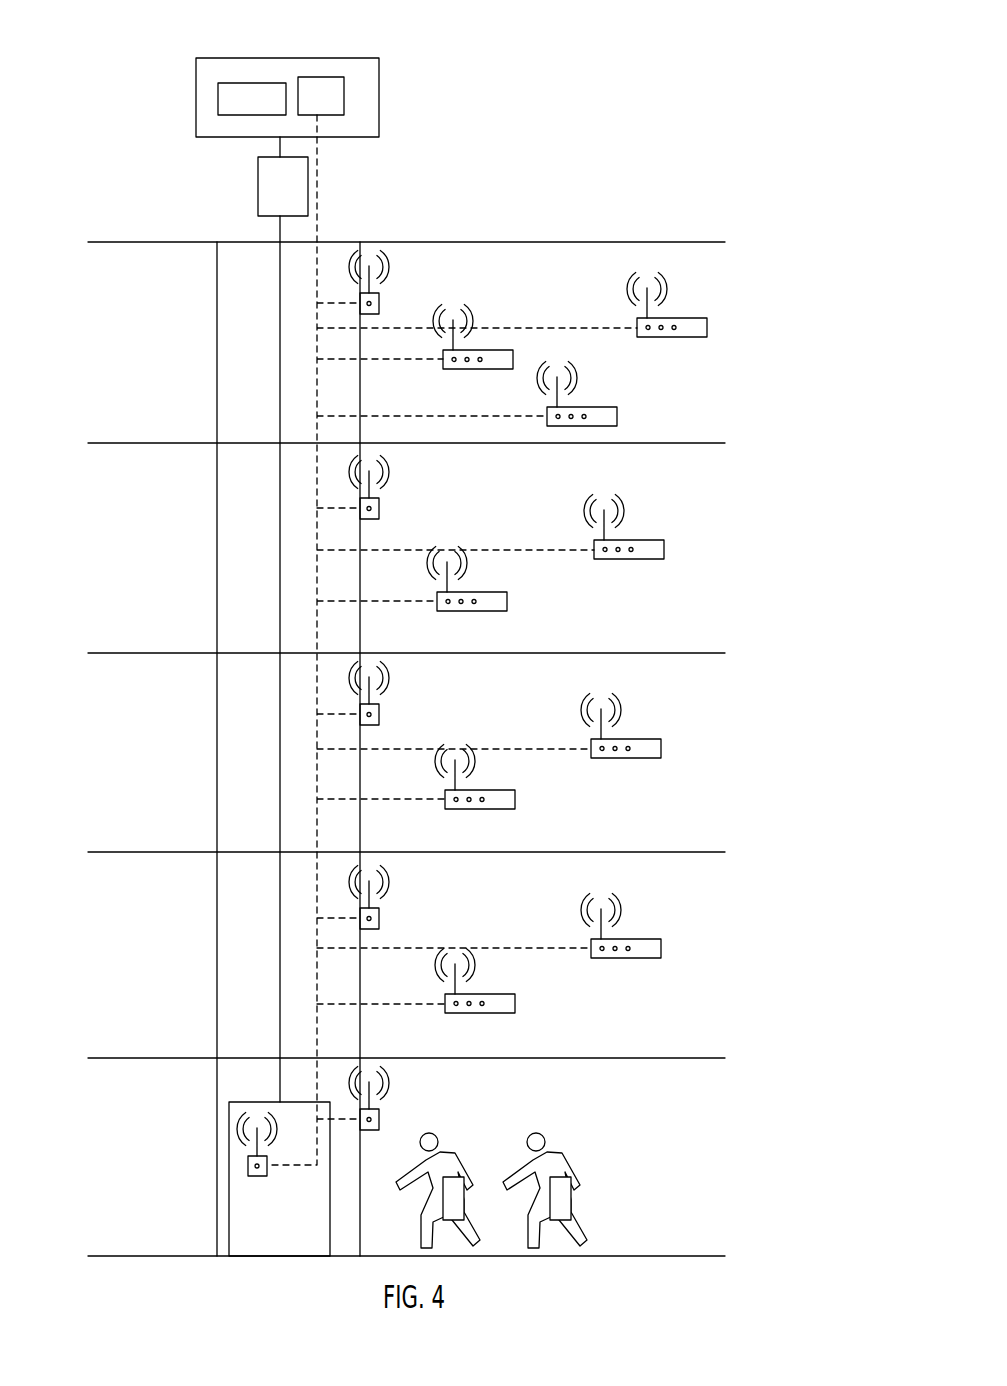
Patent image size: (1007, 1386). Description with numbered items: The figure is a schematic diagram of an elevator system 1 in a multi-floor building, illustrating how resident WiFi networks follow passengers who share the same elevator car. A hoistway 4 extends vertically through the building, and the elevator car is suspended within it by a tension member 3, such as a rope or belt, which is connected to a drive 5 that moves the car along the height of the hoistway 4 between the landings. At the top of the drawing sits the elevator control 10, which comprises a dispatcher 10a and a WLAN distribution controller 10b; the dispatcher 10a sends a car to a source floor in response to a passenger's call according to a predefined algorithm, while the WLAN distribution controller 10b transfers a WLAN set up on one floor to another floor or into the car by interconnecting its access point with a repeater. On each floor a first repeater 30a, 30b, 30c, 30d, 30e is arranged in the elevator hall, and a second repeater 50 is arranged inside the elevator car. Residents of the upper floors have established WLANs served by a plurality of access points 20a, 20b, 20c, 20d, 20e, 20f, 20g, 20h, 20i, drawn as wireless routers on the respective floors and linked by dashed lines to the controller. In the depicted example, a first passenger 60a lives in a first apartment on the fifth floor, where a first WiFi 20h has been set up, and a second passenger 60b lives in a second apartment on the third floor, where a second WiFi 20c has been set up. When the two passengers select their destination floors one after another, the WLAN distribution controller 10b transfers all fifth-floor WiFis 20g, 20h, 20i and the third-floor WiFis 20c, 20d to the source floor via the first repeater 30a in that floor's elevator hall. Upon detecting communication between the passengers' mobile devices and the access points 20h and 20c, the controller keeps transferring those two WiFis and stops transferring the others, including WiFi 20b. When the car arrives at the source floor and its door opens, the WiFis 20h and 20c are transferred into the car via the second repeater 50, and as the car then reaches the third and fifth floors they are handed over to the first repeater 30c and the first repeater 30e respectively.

The elevator system 1 is at (544, 152).
The tension member 3 is at (280, 402).
The hoistway 4 is at (238, 298).
The drive 5 is at (268, 187).
The elevator control 10 is at (196, 103).
The dispatcher 10a is at (258, 83).
The WLAN distribution controller 10b is at (344, 96).
The access point 20a is at (515, 1003).
The access point 20b is at (660, 947).
The access point 20c is at (515, 798).
The access point 20d is at (660, 748).
The access point 20e is at (507, 600).
The access point 20f is at (664, 550).
The access point 20g is at (617, 415).
The access point 20h is at (514, 358).
The access point 20i is at (707, 327).
The first repeater 30a is at (379, 1118).
The first repeater 30b is at (379, 917).
The first repeater 30c is at (379, 713).
The first repeater 30d is at (379, 507).
The first repeater 30e is at (379, 302).
The second repeater 50 is at (248, 1166).
The first passenger 60a is at (457, 1150).
The second passenger 60b is at (564, 1150).